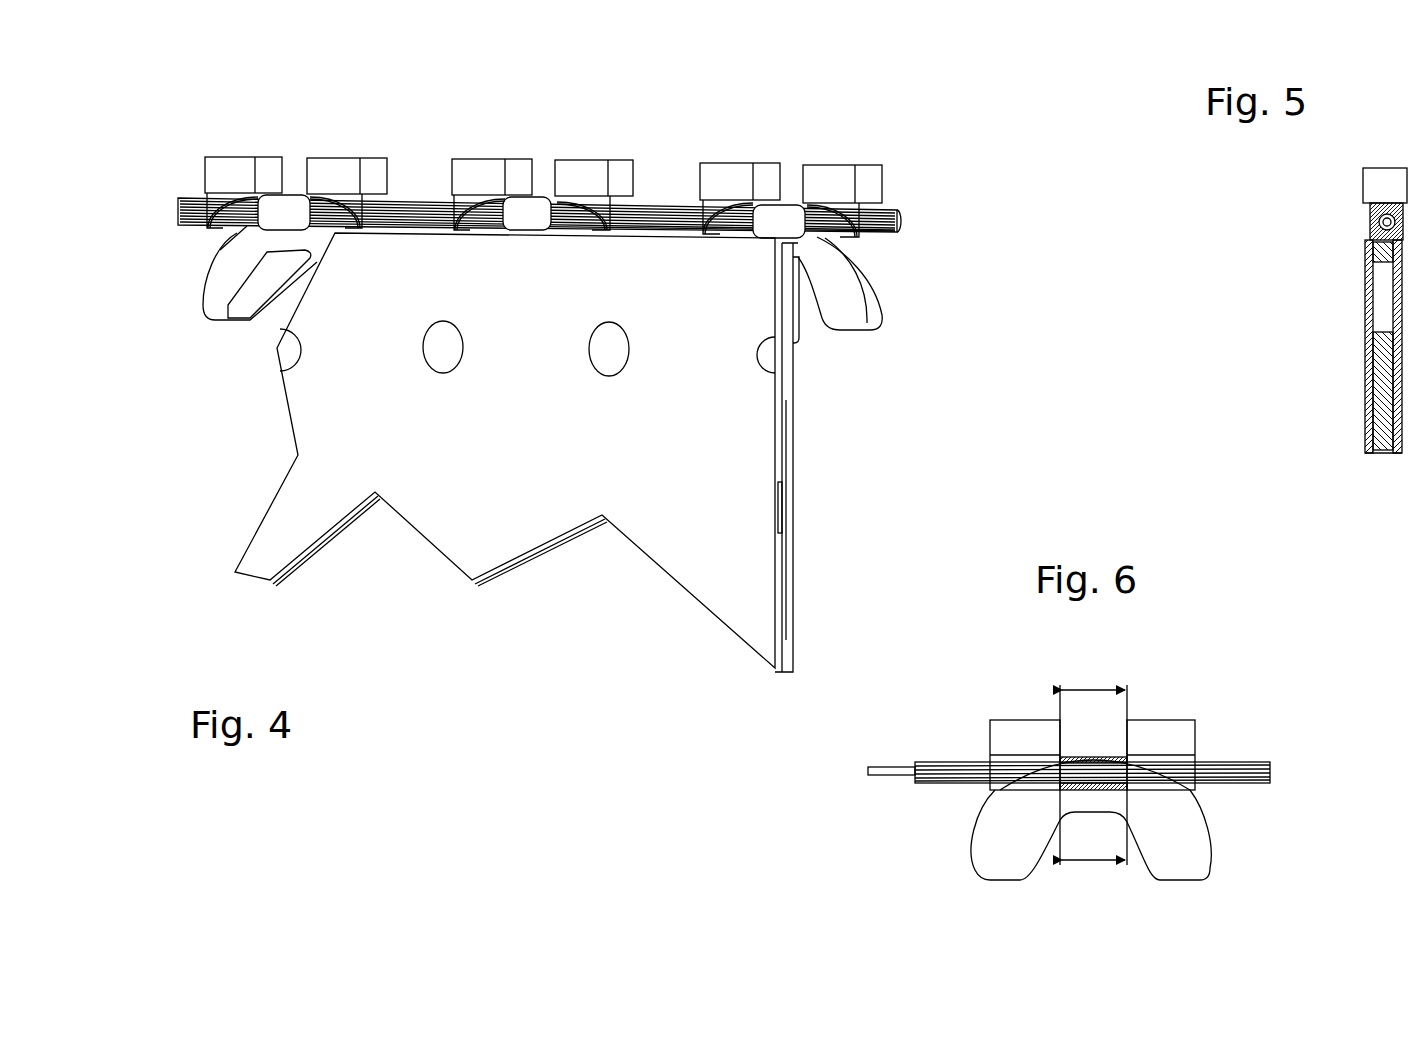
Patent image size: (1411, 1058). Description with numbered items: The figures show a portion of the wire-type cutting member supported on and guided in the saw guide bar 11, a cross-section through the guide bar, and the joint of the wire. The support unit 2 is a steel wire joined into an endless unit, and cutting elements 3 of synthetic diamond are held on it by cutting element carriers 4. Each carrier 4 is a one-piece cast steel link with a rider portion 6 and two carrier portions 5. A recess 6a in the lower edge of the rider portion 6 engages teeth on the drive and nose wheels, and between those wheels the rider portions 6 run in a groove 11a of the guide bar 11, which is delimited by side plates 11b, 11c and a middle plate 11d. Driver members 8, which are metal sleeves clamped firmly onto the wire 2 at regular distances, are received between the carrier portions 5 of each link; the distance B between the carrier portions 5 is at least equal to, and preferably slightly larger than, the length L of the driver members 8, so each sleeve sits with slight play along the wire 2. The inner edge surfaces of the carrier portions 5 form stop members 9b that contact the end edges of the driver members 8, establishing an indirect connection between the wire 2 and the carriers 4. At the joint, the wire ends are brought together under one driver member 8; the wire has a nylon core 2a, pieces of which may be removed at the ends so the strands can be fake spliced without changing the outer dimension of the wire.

In FIG. 4, the support unit 2 is at (420, 200).
In FIG. 5, the support unit 2 is at (1368, 228).
In FIG. 6, the support unit 2 is at (940, 762).
In FIG. 6, the nylon core 2a is at (880, 776).
In FIG. 4, the cutting elements 3 is at (722, 178).
In FIG. 5, the cutting elements 3 is at (1375, 178).
In FIG. 6, the cutting elements 3 is at (1012, 733).
In FIG. 4, the cutting element carrier 4 is at (883, 185).
In FIG. 4, the carrier portions 5 is at (462, 200).
In FIG. 5, the carrier portions 5 is at (1368, 240).
In FIG. 6, the carrier portions 5 is at (1175, 765).
In FIG. 4, the rider portion 6 is at (232, 267).
In FIG. 5, the rider portion 6 is at (1368, 253).
In FIG. 6, the rider portion 6 is at (1175, 830).
In FIG. 4, the recess 6a is at (290, 270).
In FIG. 4, the driver members 8 is at (292, 205).
In FIG. 5, the driver members 8 is at (1370, 218).
In FIG. 6, the driver members 8 is at (1113, 760).
In FIG. 4, the stop members 9b is at (755, 207).
In FIG. 4, the saw guide bar 11 is at (313, 407).
In FIG. 4, the groove 11a is at (787, 302).
In FIG. 4, the side plate 11b is at (708, 409).
In FIG. 5, the side plate 11b is at (1368, 353).
In FIG. 4, the side plate 11c is at (797, 450).
In FIG. 5, the side plate 11c is at (1370, 438).
In FIG. 4, the middle plate 11d is at (782, 537).
In FIG. 5, the middle plate 11d is at (1383, 378).
In FIG. 6, the distance between the carrier portions B is at (1093, 712).
In FIG. 6, the length of the driver members L is at (1093, 882).